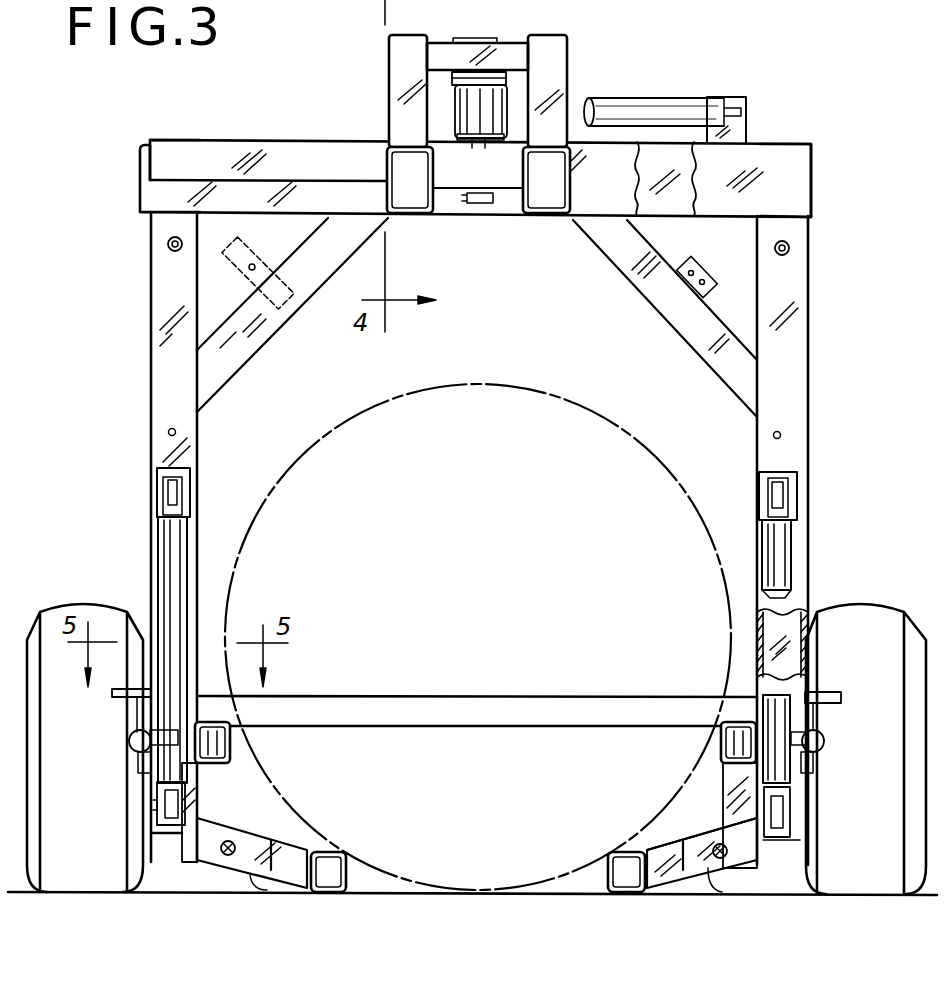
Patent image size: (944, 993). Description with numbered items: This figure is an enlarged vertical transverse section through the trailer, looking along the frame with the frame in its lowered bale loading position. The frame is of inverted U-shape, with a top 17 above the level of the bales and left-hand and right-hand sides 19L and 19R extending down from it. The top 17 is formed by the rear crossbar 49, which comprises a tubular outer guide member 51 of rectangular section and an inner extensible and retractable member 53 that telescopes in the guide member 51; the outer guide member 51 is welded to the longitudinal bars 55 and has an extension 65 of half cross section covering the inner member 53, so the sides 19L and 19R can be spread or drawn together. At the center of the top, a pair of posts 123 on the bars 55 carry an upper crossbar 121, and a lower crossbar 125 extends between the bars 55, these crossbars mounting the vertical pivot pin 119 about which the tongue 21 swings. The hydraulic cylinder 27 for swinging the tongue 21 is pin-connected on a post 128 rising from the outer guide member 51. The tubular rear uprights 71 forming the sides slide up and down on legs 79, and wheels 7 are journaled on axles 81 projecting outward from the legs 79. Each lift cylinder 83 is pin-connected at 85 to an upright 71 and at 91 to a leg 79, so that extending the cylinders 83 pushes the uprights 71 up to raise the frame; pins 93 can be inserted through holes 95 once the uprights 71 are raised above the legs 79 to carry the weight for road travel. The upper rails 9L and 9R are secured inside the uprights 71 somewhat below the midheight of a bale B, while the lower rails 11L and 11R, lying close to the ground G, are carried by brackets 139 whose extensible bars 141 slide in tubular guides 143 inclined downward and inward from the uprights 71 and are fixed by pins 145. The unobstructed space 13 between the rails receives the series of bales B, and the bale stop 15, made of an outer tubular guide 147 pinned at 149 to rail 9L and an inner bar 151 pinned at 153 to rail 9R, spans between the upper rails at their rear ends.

The wheels 7 is at (38, 614).
The right-hand upper rail 9R is at (238, 725).
The left-hand upper rail 9L is at (712, 743).
The right-hand lower rail 11R is at (356, 850).
The left-hand lower rail 11L is at (603, 850).
The space between the rails 13 is at (483, 870).
The bale stop 15 is at (515, 692).
The top of the frame 17 is at (820, 146).
The right-hand side of the frame 19R is at (140, 548).
The left-hand side of the frame 19L is at (808, 559).
The tongue 21 is at (518, 101).
The hydraulic cylinder 27 is at (693, 98).
The rear crossbar 49 is at (285, 139).
The tubular outer guide member 51 is at (383, 200).
The inner extensible and retractable member 53 is at (255, 202).
The longitudinal bars 55 is at (522, 169).
The extensions 65 is at (165, 152).
The rear uprights 71 is at (151, 405).
The legs 79 is at (780, 632).
The axles 81 is at (142, 783).
The hydraulic cylinders 83 is at (192, 593).
The pin connection 85 is at (157, 493).
The pin connection 91 is at (188, 803).
The pins 93 is at (168, 246).
The holes 95 is at (168, 434).
The vertical pivot pin 119 is at (478, 207).
The upper crossbar 121 is at (518, 42).
The posts 123 is at (390, 76).
The lower crossbar 125 is at (449, 213).
The post 128 is at (738, 133).
The brackets 139 is at (676, 828).
The extensible bars 141 is at (297, 872).
The tubular guides 143 is at (235, 872).
The pins 145 is at (223, 856).
The outer tubular guide 147 is at (410, 720).
The pin 149 is at (832, 702).
The inner bar 151 is at (140, 722).
The pin 153 is at (118, 700).
The round bales B is at (594, 408).
The ground G is at (576, 893).